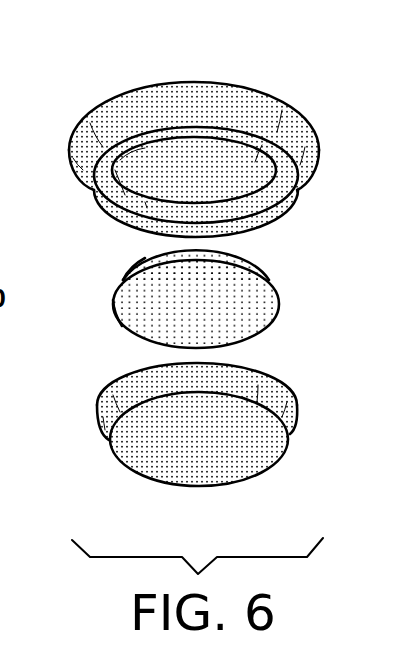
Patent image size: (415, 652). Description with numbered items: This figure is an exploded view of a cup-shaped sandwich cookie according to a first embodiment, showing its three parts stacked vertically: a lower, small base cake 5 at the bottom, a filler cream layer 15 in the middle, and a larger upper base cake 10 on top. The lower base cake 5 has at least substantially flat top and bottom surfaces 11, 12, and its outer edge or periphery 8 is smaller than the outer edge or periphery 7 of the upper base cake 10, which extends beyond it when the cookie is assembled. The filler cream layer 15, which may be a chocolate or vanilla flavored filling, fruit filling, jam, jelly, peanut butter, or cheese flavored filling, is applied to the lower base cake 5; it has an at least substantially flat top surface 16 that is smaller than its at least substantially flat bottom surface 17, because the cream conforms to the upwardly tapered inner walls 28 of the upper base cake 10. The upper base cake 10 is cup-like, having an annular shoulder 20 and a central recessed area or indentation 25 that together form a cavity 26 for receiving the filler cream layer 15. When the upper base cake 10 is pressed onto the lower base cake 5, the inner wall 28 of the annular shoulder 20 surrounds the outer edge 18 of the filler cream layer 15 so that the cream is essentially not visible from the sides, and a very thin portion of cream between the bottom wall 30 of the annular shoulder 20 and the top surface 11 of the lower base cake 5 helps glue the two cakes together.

The lower base cake 5 is at (292, 425).
The outer edge of the upper base cake 7 is at (292, 206).
The outer edge of the lower base cake 8 is at (107, 410).
The upper base cake 10 is at (292, 128).
The top surface of the lower base cake 11 is at (252, 373).
The bottom surface of the lower base cake 12 is at (133, 460).
The filler cream layer 15 is at (258, 311).
The top surface of the filler cream layer 16 is at (243, 255).
The bottom surface of the filler cream layer 17 is at (133, 312).
The outer edge of the filler cream layer 18 is at (145, 264).
The annular shoulder 20 is at (111, 202).
The central recessed area 25 is at (213, 153).
The cavity 26 is at (147, 162).
The inner wall of the annular shoulder 28 is at (255, 200).
The bottom wall of the annular shoulder 30 is at (105, 167).